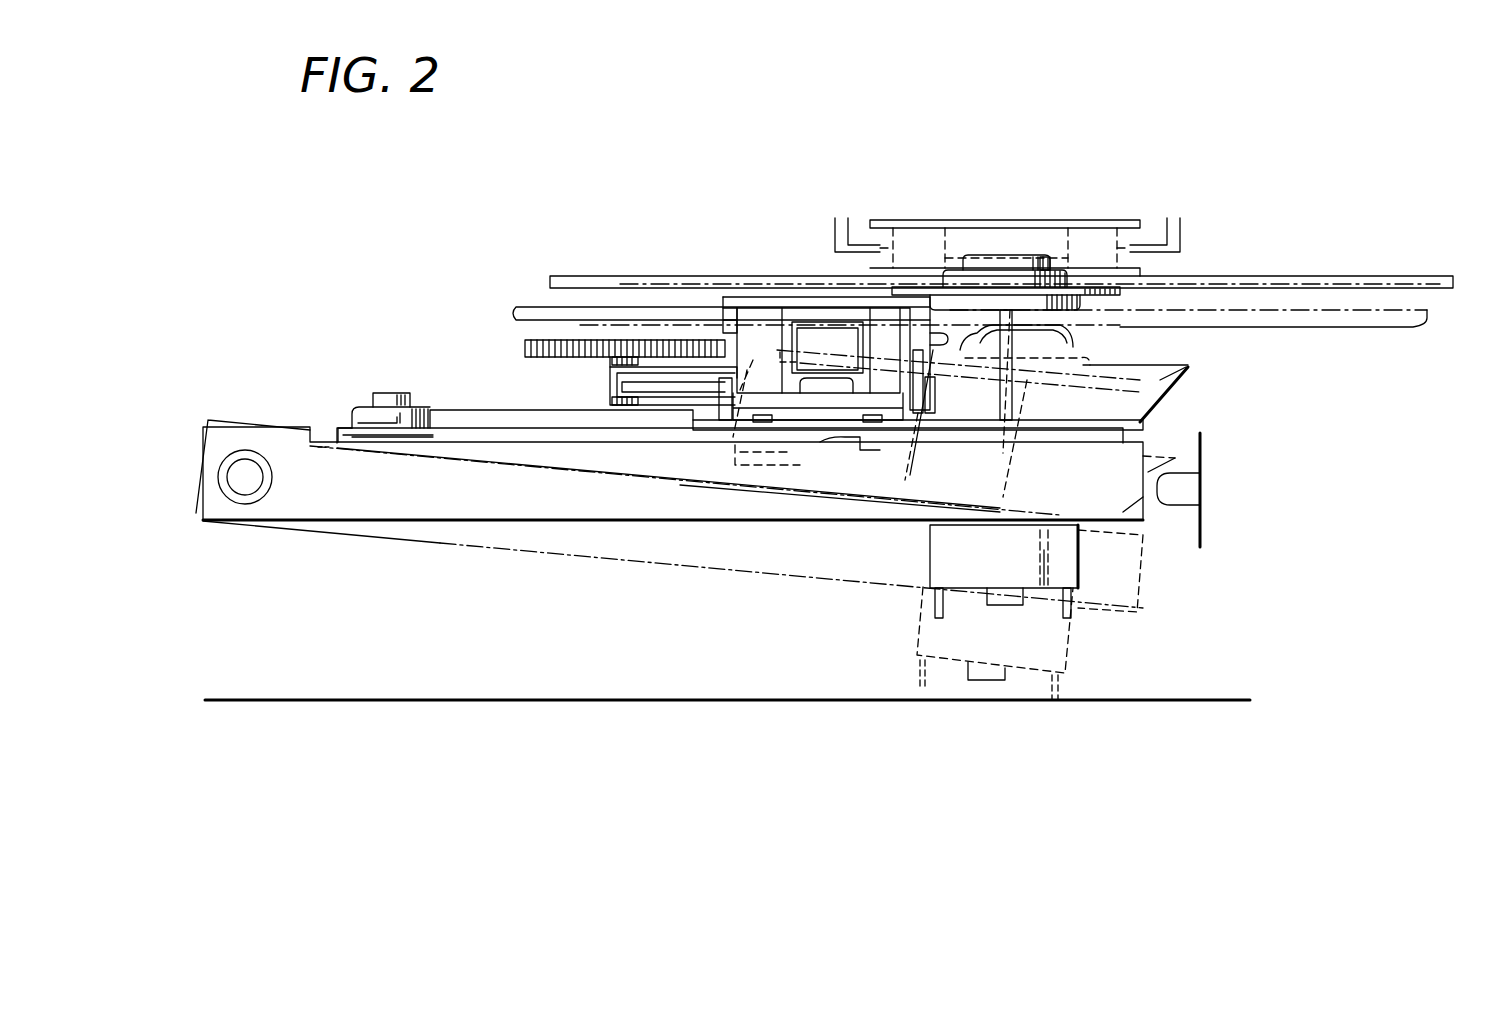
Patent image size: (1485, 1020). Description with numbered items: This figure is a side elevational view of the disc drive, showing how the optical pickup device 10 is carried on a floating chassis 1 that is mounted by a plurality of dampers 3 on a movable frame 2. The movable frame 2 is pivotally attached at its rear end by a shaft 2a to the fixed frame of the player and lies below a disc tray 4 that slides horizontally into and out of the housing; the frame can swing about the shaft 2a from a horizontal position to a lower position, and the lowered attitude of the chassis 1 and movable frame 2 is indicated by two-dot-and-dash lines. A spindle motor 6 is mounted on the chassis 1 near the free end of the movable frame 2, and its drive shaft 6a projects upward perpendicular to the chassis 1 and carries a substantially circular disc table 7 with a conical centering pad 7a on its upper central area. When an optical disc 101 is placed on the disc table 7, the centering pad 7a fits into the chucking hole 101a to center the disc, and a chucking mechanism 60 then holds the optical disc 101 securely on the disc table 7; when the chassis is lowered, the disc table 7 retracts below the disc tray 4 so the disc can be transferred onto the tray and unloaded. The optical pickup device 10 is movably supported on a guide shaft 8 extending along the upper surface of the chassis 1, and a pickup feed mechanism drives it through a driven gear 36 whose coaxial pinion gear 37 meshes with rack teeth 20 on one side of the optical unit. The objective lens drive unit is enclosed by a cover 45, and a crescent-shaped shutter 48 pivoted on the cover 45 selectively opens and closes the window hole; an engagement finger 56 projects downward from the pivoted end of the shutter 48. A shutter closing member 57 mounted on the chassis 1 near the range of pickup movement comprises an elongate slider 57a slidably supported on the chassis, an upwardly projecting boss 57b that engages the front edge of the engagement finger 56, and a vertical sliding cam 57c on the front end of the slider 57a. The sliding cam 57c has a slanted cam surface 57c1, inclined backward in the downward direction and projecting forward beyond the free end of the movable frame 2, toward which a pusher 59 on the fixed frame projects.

The chassis 1 is at (518, 433).
The movable frame 2 is at (518, 505).
The shaft 2a is at (245, 481).
The dampers 3 is at (360, 405).
The disc tray 4 is at (1385, 330).
The spindle motor 6 is at (1068, 560).
The drive shaft 6a is at (1080, 335).
The disc table 7 is at (1107, 288).
The conical centering pad 7a is at (1002, 285).
The guide shaft 8 is at (470, 410).
The optical pickup device 10 is at (768, 296).
The rack teeth 20 is at (680, 372).
The driven gear 36 is at (537, 335).
The pinion gear 37 is at (623, 345).
The cover 45 is at (740, 310).
The shutter 48 is at (818, 305).
The engagement finger 56 is at (913, 372).
The shutter closing member 57 is at (1143, 428).
The slider 57a is at (807, 428).
The boss 57b is at (935, 385).
The sliding cam 57c is at (1170, 368).
The slanted cam surface 57c1 is at (1178, 383).
The pusher 59 is at (1185, 490).
The chucking mechanism 60 is at (922, 220).
The optical disc 101 is at (1240, 276).
The chucking hole 101a is at (1052, 260).